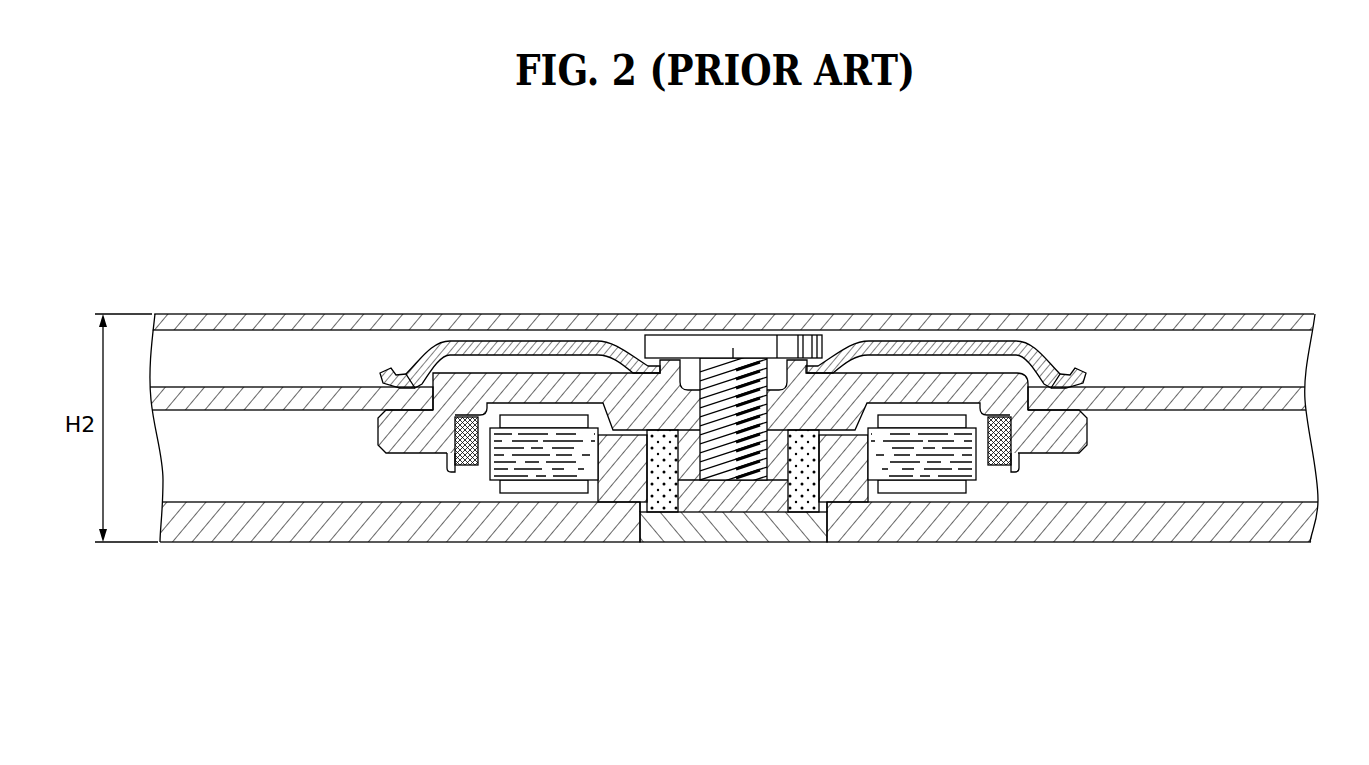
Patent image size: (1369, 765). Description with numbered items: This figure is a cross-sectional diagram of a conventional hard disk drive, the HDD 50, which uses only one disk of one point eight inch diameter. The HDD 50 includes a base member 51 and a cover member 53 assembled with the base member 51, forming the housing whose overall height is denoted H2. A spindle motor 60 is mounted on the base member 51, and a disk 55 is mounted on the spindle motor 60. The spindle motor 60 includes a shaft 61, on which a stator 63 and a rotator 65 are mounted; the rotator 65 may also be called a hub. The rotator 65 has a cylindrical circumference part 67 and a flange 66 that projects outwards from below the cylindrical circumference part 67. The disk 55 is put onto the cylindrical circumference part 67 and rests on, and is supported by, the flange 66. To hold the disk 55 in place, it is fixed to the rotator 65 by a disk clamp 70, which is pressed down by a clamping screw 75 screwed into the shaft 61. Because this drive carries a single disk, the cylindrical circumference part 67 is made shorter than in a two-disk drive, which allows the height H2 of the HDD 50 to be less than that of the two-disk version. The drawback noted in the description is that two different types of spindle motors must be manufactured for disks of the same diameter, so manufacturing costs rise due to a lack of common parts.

The HDD 50 is at (300, 245).
The base member 51 is at (321, 525).
The cover member 53 is at (382, 325).
The disk 55 is at (1290, 405).
The spindle motor 60 is at (1032, 605).
The shaft 61 is at (767, 500).
The stator 63 is at (552, 468).
The rotator 65 is at (972, 388).
The flange 66 is at (400, 432).
The cylindrical circumference part 67 is at (413, 365).
The disk clamp 70 is at (908, 350).
The clamping screw 75 is at (702, 343).